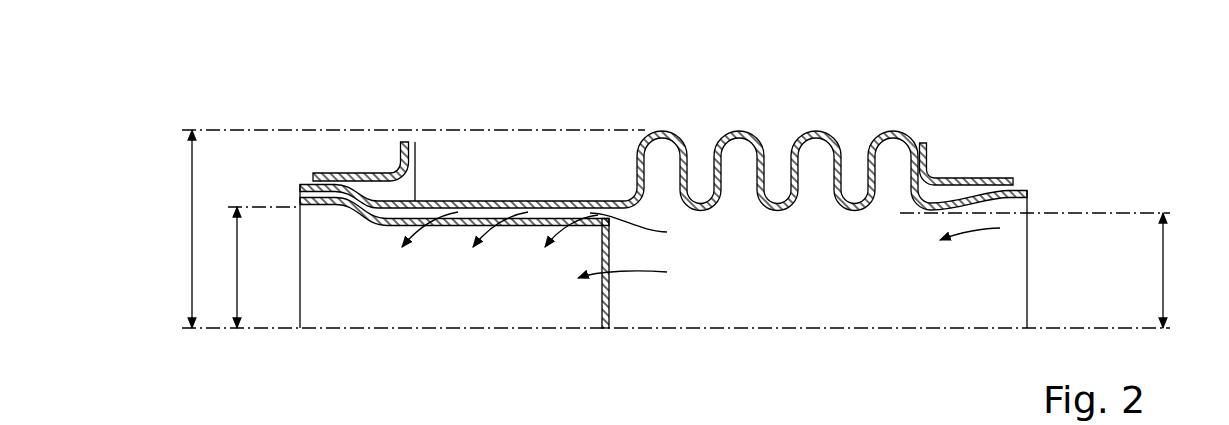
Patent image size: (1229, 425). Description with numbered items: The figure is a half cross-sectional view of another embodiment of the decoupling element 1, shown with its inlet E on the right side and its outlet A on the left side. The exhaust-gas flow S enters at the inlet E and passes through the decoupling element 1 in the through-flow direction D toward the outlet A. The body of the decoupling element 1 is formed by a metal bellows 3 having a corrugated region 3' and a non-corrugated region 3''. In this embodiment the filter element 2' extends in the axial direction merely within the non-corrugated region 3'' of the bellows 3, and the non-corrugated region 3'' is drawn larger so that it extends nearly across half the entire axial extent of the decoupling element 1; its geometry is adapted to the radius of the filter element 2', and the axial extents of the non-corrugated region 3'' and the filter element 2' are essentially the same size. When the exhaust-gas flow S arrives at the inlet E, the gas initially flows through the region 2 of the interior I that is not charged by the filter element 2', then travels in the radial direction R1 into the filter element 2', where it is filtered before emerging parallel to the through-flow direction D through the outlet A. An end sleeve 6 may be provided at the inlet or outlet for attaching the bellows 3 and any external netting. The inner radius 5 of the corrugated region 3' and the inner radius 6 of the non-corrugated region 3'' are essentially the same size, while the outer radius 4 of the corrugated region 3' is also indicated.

The decoupling element 1 is at (858, 85).
The region of the interior 2 is at (663, 303).
The filter element 2' is at (454, 286).
The bellows 3 is at (663, 140).
The corrugated region 3' is at (691, 66).
The non-corrugated region 3'' is at (491, 167).
The outer radius 4 is at (192, 243).
The inner radius 5 is at (1165, 272).
The inner radius 6 is at (237, 283).
The outlet A is at (292, 305).
The exhaust-gas flow S is at (593, 216).
The through-flow direction D is at (987, 263).
The inlet E is at (1035, 300).
The interior I is at (783, 263).
The radial direction R1 is at (149, 317).